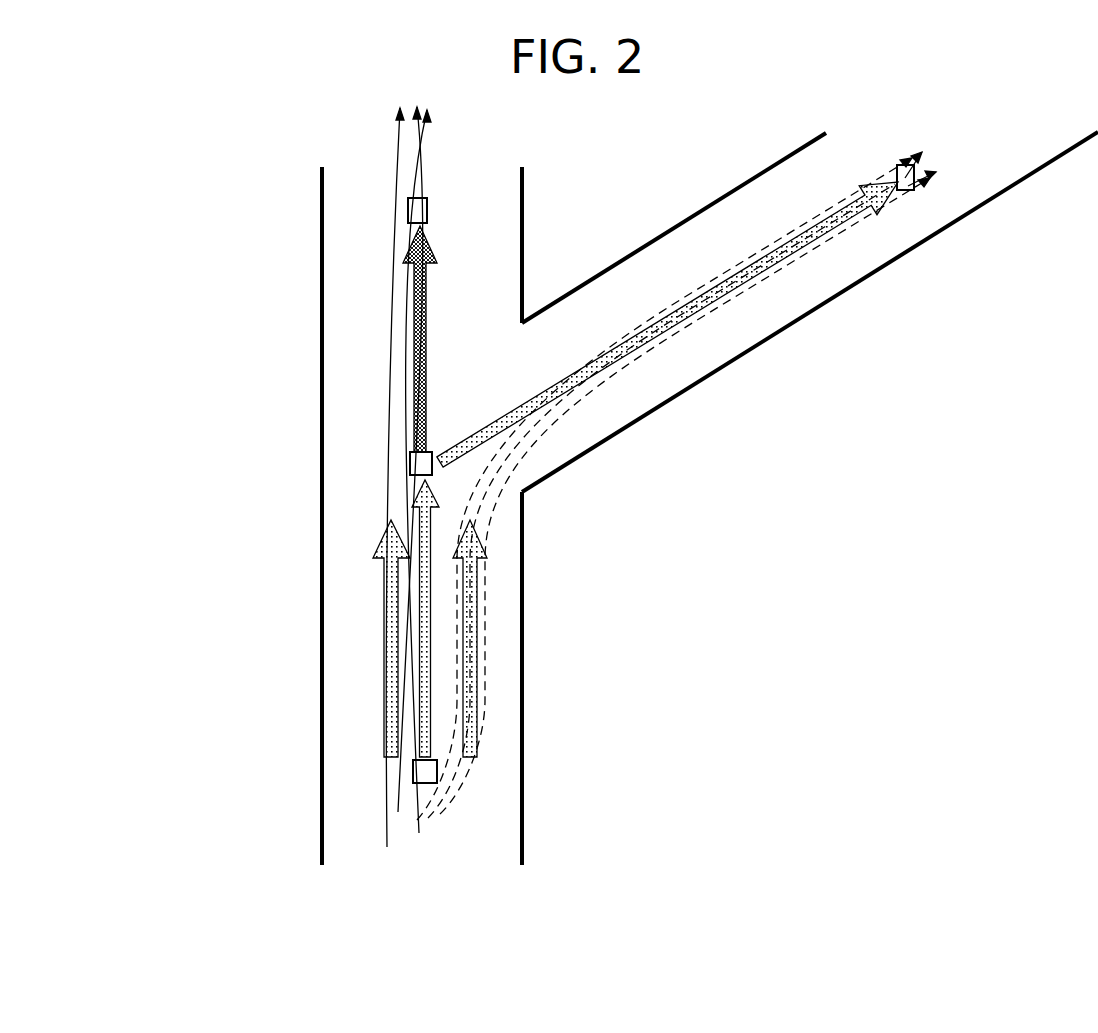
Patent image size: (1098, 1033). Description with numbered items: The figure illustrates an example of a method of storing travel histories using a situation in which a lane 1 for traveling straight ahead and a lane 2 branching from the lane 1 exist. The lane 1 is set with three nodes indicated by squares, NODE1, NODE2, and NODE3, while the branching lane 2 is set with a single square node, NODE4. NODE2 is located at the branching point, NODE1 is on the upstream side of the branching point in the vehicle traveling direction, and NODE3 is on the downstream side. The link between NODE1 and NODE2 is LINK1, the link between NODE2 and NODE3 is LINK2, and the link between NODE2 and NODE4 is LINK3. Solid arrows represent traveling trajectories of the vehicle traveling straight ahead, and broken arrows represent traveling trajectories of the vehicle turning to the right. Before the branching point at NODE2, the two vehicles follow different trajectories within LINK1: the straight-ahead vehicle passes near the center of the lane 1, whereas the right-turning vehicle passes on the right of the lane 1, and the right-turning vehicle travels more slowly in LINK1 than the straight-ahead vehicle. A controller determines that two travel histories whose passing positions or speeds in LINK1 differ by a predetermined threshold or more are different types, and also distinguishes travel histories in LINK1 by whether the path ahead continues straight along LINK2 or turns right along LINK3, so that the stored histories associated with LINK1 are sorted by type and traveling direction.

The lane 1 is at (320, 557).
The lane 2 is at (677, 398).
The node NODE1 is at (430, 772).
The node NODE2 is at (430, 469).
The node NODE3 is at (408, 207).
The node NODE4 is at (907, 192).
The link LINK1 is at (431, 653).
The link LINK2 is at (428, 336).
The link LINK3 is at (722, 298).